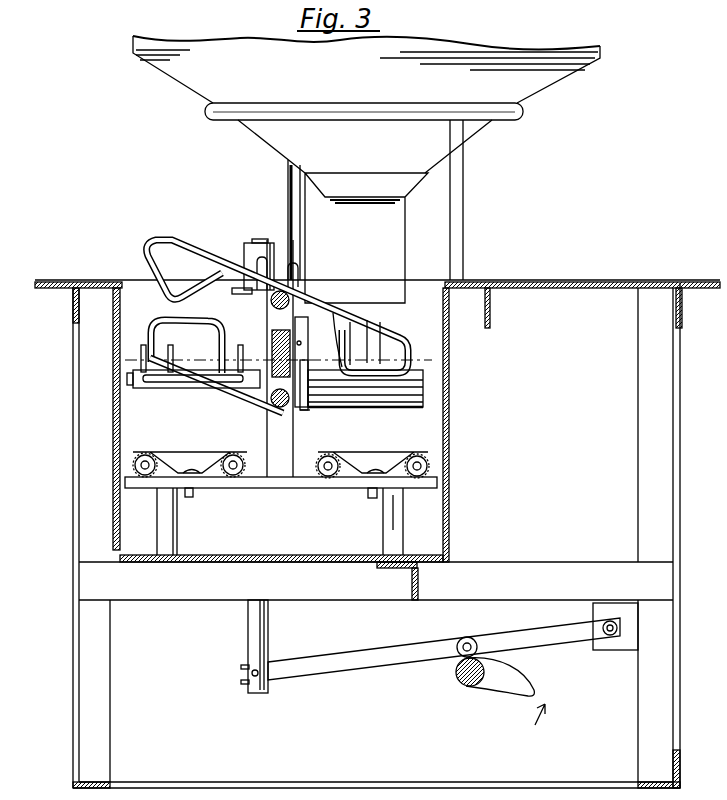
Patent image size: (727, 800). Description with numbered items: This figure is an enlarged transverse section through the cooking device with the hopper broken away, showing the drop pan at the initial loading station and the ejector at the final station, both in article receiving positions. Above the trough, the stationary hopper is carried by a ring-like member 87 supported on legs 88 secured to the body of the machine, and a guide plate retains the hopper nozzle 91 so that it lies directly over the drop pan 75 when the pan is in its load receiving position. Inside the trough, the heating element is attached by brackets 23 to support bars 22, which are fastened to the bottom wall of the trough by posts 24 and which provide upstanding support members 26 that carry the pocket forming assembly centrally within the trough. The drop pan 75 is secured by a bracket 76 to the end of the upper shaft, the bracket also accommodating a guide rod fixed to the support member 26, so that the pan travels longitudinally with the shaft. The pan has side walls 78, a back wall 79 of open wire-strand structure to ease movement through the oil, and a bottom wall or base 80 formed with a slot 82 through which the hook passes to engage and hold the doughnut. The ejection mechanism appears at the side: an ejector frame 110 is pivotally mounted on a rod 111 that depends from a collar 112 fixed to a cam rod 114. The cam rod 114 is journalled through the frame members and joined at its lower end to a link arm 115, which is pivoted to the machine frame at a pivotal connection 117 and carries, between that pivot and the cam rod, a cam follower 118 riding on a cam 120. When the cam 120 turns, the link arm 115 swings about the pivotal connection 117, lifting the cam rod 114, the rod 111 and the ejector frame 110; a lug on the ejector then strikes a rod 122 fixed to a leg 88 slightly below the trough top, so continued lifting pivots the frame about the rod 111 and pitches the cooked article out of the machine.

The ring-like member 87 is at (523, 110).
The legs 88 is at (462, 218).
The hopper nozzle 91 is at (388, 268).
The collar 112 is at (245, 252).
The rod 122 is at (235, 292).
The bracket 76 is at (302, 325).
The back wall 79 is at (425, 360).
The drop pan 75 is at (425, 380).
The side walls 78 is at (425, 387).
The bottom wall or base 80 is at (412, 416).
The slot 82 is at (372, 420).
The rod 111 is at (127, 378).
The ejector frame 110 is at (133, 383).
The brackets 23 is at (140, 450).
The support bars 22 is at (133, 468).
The upstanding support members 26 is at (278, 470).
The posts 24 is at (170, 540).
The cam rod 114 is at (250, 633).
The link arm 115 is at (332, 668).
The cam follower 118 is at (460, 640).
The cam 120 is at (510, 680).
The pivotal connection 117 is at (614, 642).